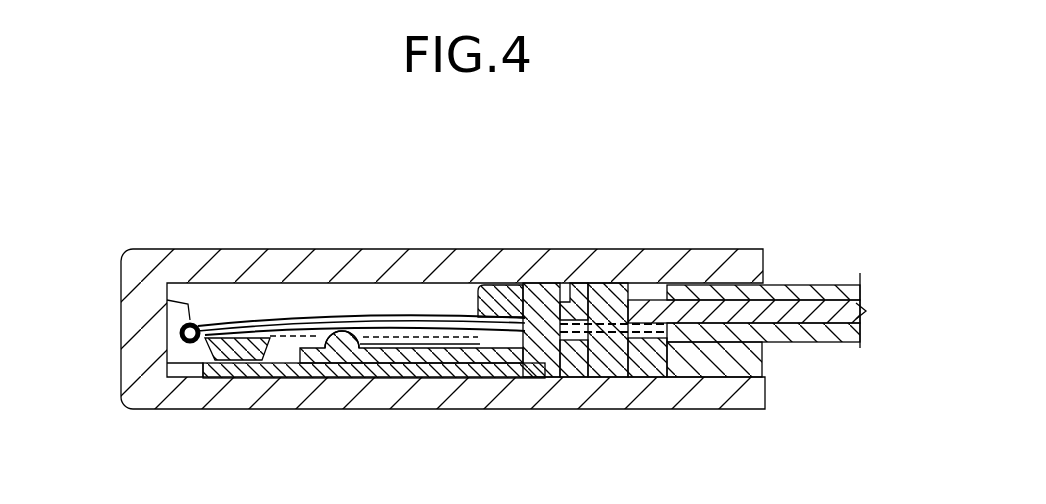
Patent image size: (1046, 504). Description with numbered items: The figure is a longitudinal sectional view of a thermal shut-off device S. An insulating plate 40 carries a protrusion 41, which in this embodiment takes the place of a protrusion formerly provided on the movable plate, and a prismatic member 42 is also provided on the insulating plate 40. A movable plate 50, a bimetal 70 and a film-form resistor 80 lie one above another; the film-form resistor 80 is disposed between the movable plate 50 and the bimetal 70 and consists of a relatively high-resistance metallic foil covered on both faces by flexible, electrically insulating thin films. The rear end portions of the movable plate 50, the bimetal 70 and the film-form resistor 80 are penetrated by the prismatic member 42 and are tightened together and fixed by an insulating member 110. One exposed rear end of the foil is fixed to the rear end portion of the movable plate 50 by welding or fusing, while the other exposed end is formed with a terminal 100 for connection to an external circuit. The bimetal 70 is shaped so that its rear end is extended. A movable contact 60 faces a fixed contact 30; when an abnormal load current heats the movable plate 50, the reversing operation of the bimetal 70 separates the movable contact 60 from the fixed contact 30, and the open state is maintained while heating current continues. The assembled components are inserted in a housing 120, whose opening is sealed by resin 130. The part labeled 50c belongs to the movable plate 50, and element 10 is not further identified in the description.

The thermal shut-off device S is at (439, 210).
The substrate 10 is at (498, 378).
The fixed contact 30 is at (256, 365).
The insulating plate 40 is at (356, 365).
The protrusion 41 is at (332, 348).
The prismatic member 42 is at (572, 290).
The movable plate 50 is at (284, 322).
The pivot portion of movable arm 50c is at (197, 318).
The movable contact 60 is at (170, 345).
The bimetal 70 is at (366, 330).
The film-form resistor 80 is at (385, 340).
The terminal 100 is at (632, 334).
The insulating member 110 is at (490, 292).
The housing 120 is at (701, 262).
The resin 130 is at (748, 355).